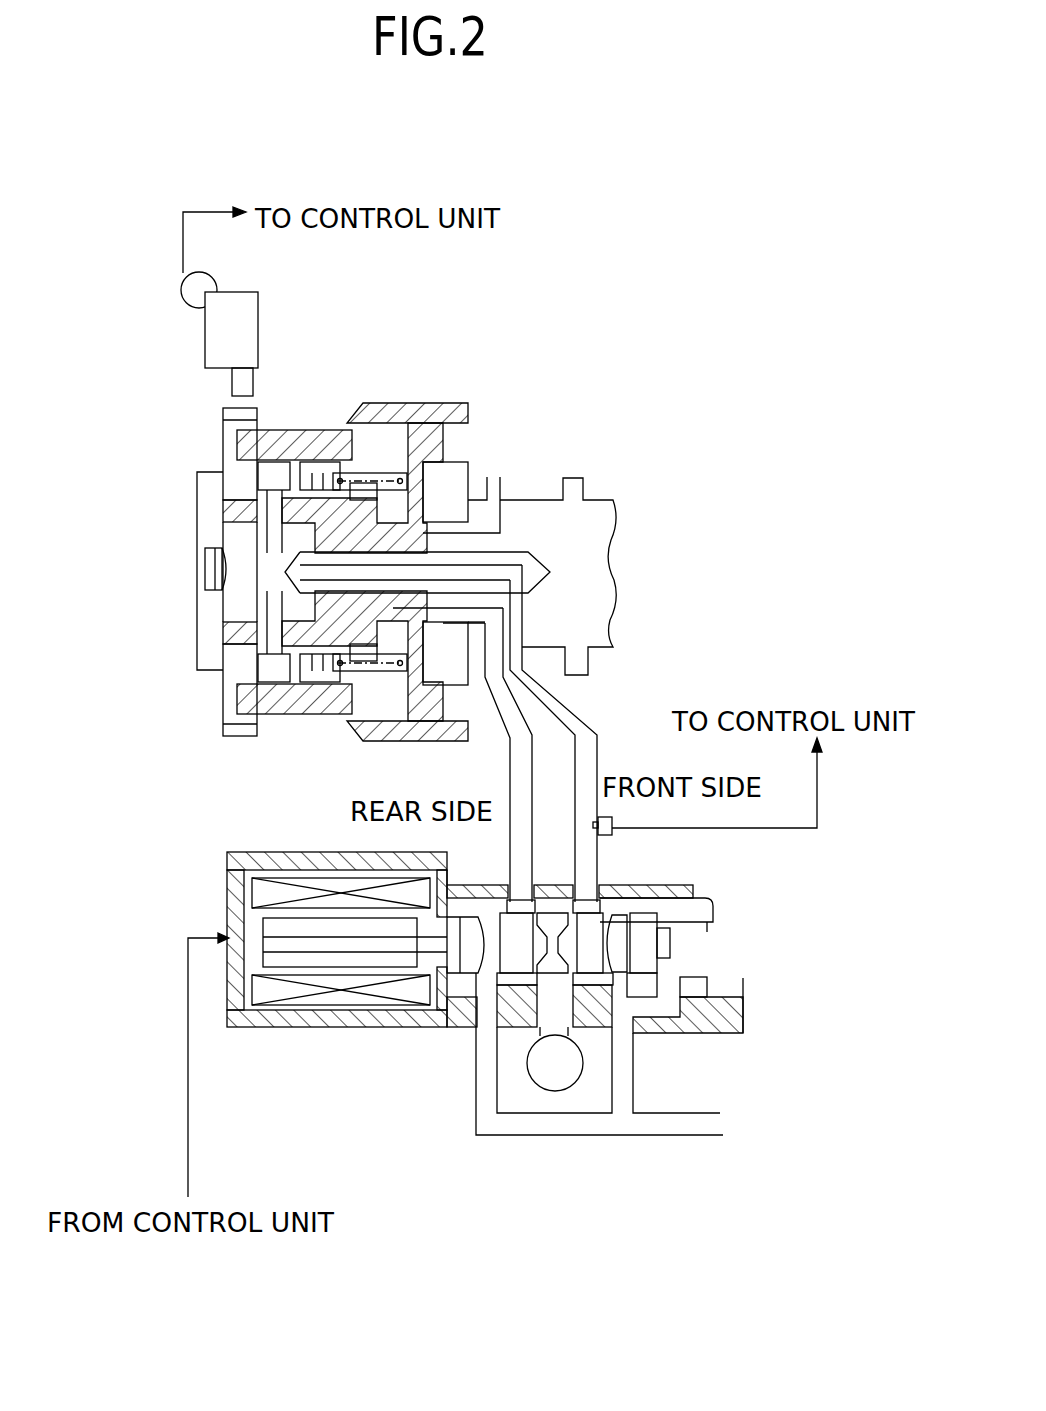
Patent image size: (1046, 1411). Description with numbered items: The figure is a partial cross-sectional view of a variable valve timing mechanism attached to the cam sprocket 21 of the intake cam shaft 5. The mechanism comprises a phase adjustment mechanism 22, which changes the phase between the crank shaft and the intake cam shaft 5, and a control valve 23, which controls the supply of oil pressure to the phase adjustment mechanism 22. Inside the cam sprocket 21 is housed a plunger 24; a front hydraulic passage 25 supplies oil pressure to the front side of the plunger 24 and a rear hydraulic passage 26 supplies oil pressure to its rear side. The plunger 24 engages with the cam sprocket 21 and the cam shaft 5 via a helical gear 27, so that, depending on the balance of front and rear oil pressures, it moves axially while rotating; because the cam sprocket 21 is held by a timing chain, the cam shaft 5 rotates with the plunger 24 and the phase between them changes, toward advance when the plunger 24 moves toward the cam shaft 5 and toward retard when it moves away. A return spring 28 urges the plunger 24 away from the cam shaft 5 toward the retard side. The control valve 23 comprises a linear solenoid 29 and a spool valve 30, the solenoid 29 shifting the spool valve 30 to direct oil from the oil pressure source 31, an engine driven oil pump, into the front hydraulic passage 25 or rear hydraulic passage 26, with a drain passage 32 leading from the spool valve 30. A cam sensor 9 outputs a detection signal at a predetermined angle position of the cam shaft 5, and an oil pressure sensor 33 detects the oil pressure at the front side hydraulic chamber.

The intake cam shaft 5 is at (597, 510).
The cam sensor 9 is at (258, 316).
The cam sprocket 21 is at (409, 410).
The phase adjustment mechanism 22 is at (187, 443).
The control valve 23 is at (334, 842).
The plunger 24 is at (360, 410).
The front hydraulic passage 25 is at (598, 748).
The rear hydraulic passage 26 is at (515, 766).
The helical gear 27 is at (317, 420).
The return spring 28 is at (355, 685).
The linear solenoid 29 is at (258, 1027).
The spool valve 30 is at (672, 948).
The oil pressure source 31 is at (553, 1091).
The drain passage 32 is at (600, 1130).
The oil pressure sensor 33 is at (612, 838).